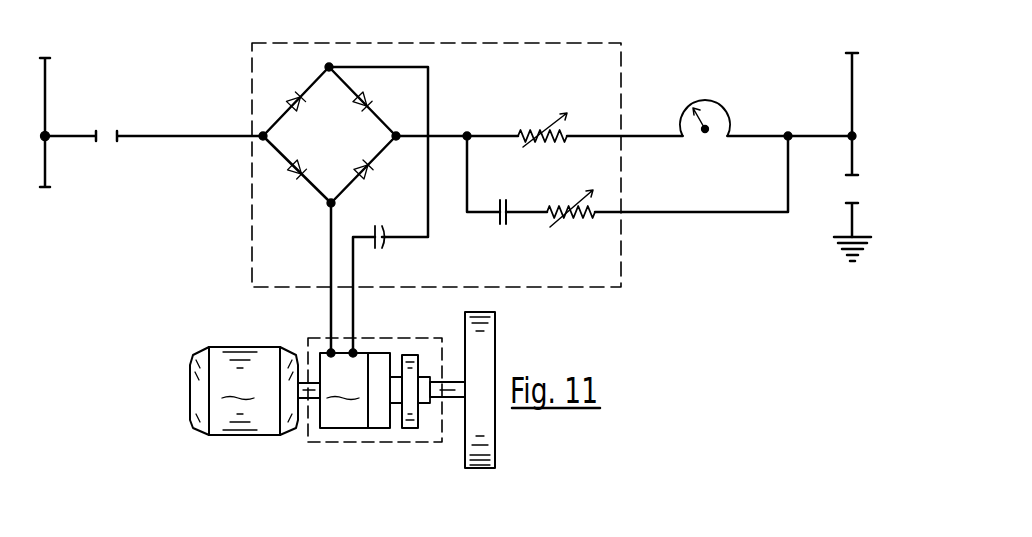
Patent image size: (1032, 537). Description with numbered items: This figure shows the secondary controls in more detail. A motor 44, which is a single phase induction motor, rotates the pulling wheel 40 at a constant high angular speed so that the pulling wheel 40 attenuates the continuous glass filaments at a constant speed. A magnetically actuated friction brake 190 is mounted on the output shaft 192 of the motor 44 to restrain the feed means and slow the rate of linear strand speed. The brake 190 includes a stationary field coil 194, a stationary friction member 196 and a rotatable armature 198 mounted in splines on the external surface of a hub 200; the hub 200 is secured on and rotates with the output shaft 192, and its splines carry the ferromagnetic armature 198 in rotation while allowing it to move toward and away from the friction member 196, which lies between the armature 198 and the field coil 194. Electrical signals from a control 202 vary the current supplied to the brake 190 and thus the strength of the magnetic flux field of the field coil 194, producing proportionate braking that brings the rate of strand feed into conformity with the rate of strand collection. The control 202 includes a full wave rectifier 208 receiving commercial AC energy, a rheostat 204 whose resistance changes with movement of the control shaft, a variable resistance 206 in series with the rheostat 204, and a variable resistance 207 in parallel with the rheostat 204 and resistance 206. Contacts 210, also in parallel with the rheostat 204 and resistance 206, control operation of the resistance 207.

The pulling wheel 40 is at (495, 343).
The motor 44 is at (244, 391).
The magnetically actuated friction brake 190 is at (308, 442).
The output shaft 192 is at (303, 380).
The stationary field coil 194 is at (344, 390).
The stationary friction member 196 is at (378, 356).
The rotatable armature 198 is at (447, 323).
The hub 200 is at (425, 403).
The control 202 is at (621, 43).
The rheostat 204 is at (731, 80).
The variable resistance 206 is at (547, 128).
The variable resistance 207 is at (572, 208).
The full wave rectifier 208 is at (331, 66).
The contacts 210 is at (522, 172).